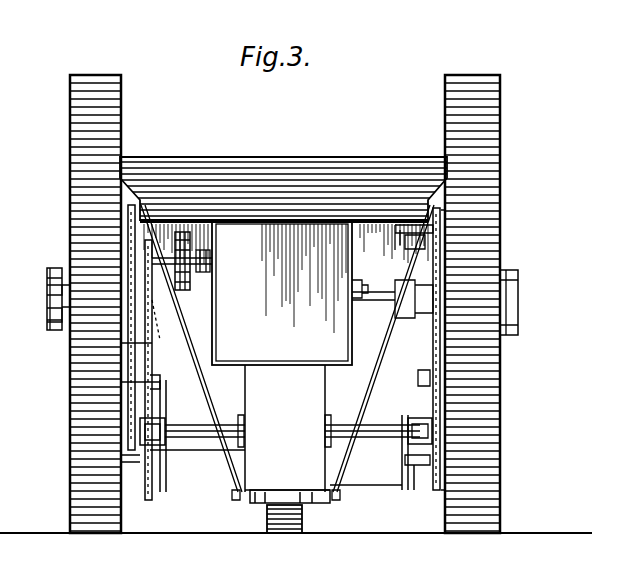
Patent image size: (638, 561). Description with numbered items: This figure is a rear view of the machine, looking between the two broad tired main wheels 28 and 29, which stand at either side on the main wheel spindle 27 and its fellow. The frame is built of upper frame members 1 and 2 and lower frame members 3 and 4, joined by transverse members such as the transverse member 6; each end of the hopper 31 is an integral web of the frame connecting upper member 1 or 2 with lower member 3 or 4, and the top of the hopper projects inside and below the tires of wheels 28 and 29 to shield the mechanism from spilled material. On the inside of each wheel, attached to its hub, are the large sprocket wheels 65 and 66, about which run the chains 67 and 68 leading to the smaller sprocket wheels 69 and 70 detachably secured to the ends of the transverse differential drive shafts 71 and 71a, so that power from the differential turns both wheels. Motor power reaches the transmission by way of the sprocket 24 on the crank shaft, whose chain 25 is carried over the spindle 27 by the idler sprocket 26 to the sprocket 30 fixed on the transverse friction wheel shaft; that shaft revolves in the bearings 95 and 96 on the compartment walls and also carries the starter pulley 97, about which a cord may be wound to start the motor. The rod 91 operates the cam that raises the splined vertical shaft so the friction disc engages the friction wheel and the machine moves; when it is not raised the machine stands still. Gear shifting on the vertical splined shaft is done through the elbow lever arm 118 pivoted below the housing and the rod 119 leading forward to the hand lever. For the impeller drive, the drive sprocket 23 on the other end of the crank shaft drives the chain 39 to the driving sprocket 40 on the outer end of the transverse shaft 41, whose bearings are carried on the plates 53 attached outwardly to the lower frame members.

The upper frame member 1 is at (128, 232).
The upper frame member 2 is at (445, 212).
The lower frame member 3 is at (130, 460).
The lower frame member 4 is at (428, 450).
The transverse member 6 is at (302, 205).
The drive sprocket 23 is at (440, 376).
The sprocket 24 is at (150, 383).
The chain 25 is at (140, 343).
The idler sprocket 26 is at (152, 300).
The main wheel spindle 27 is at (160, 335).
The broad tired wheel 28 is at (90, 85).
The broad tired wheel 29 is at (500, 117).
The sprocket 30 is at (290, 527).
The hopper 31 is at (296, 160).
The chain 39 is at (432, 405).
The driving sprocket 40 is at (415, 492).
The transverse shaft 41 is at (403, 480).
The plate 53 is at (163, 485).
The large sprocket wheel 65 is at (58, 323).
The large sprocket wheel 66 is at (445, 252).
The chain 67 is at (56, 272).
The chain 68 is at (445, 268).
The smaller sprocket wheel 69 is at (140, 440).
The smaller sprocket wheel 70 is at (430, 468).
The differential drive shaft 71 is at (210, 425).
The differential drive shaft 71a is at (358, 426).
The rod 91 is at (338, 500).
The bearing 95 is at (210, 262).
The bearing 96 is at (360, 280).
The starter pulley 97 is at (180, 235).
The elbow lever arm 118 is at (240, 500).
The rod 119 is at (168, 294).